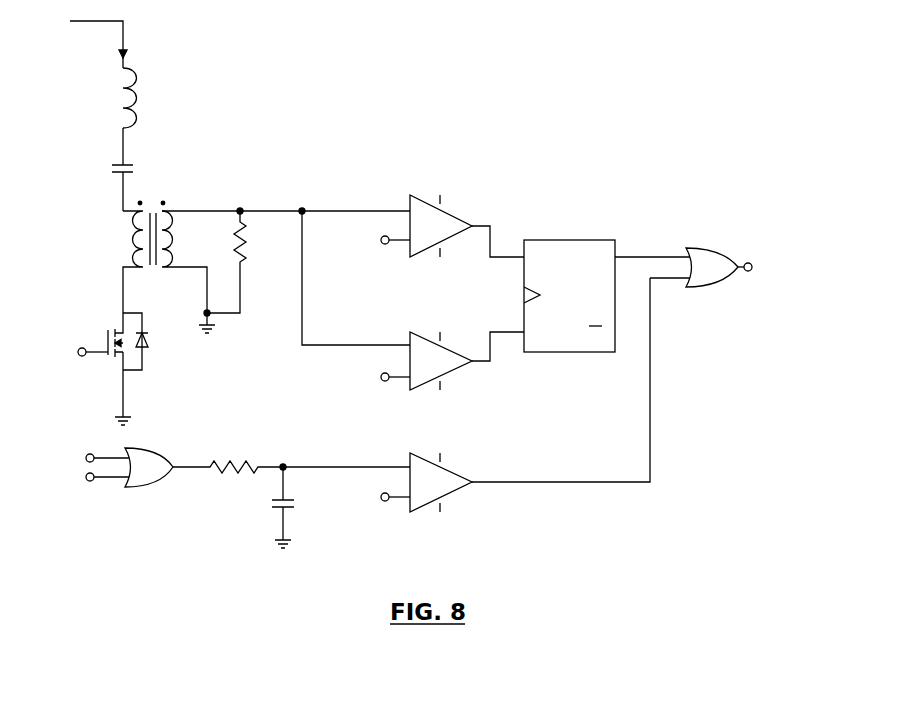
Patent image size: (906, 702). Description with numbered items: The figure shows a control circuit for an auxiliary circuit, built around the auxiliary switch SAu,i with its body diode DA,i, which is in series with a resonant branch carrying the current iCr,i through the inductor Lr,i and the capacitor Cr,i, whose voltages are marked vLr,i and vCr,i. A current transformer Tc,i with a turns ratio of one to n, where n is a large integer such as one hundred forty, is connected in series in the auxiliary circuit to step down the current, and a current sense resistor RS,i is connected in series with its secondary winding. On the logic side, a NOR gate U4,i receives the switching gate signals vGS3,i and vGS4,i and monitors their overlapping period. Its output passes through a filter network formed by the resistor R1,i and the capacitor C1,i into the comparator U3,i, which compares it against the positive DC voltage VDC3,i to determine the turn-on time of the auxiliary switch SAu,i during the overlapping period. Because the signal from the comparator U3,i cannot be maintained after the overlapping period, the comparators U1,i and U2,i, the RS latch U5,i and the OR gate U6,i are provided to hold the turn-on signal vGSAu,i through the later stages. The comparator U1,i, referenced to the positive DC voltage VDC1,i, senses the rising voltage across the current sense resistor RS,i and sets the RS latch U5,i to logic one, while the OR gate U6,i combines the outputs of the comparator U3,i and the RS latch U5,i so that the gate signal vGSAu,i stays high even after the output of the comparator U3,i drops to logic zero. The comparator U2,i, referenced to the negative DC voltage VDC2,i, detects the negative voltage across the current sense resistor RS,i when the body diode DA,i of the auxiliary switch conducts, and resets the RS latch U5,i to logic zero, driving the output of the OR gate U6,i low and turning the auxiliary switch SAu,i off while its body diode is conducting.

The resonant capacitor current iCr,i is at (115, 44).
The resonant inductor Lr,i is at (138, 116).
The resonant inductor voltage vLr,i is at (88, 99).
The resonant capacitor Cr,i is at (134, 186).
The resonant capacitor voltage vCr,i is at (84, 167).
The current transformer Tc,i is at (150, 257).
The current sense resistor RS,i is at (286, 270).
The auxiliary switch SAu,i is at (98, 369).
The body diode of auxiliary switch DA,i is at (149, 341).
The comparator U1,i is at (411, 258).
The positive DC voltage VDC1,i is at (363, 242).
The comparator U2,i is at (467, 348).
The negative DC voltage VDC2,i is at (357, 379).
The RS latch U5,i is at (569, 314).
The OR gate U6,i is at (683, 282).
The turn-on signal vGSAu,i is at (781, 268).
The comparator U3,i is at (466, 395).
The positive DC voltage VDC3,i is at (363, 499).
The NOR gate U4,i is at (129, 482).
The switching gate signal vGS3,i is at (43, 459).
The switching gate signal vGS4,i is at (43, 478).
The filter resistor R1,i is at (228, 454).
The filter capacitor C1,i is at (264, 506).